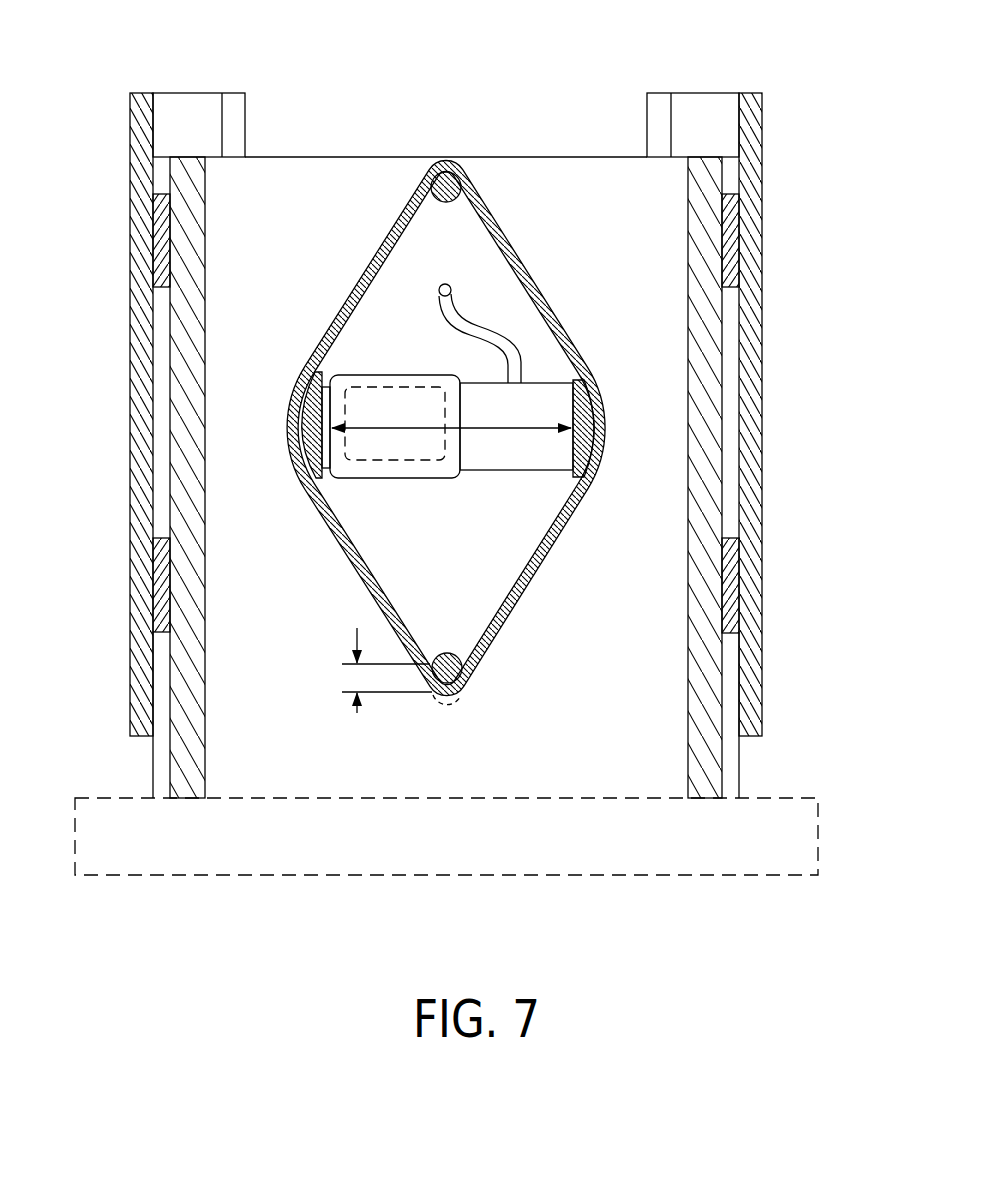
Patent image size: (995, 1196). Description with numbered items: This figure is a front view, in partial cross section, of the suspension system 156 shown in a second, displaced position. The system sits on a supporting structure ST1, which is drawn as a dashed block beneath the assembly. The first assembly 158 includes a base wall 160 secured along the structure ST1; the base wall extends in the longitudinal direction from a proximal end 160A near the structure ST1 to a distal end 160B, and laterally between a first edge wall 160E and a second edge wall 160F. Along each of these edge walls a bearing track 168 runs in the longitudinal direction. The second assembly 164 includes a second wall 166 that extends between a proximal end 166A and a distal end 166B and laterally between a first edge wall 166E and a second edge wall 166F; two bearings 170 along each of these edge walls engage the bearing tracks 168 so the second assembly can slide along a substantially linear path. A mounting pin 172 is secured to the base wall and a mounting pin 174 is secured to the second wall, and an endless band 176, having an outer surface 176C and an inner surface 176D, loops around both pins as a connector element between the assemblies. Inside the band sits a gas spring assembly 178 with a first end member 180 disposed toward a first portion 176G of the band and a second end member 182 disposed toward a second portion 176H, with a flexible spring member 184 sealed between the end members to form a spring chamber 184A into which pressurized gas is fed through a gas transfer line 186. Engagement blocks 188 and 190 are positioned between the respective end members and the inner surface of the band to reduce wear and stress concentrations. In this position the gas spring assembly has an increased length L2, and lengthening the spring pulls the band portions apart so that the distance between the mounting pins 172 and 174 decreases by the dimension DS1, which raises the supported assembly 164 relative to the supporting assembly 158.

The suspension system 156 is at (625, 76).
The first assembly 158 is at (347, 128).
The base wall 160 is at (580, 186).
The proximal end 160A is at (650, 757).
The distal end 160B is at (660, 197).
The first edge wall 160E is at (688, 320).
The second edge wall 160F is at (205, 345).
The second assembly 164 is at (772, 86).
The second wall 166 is at (470, 414).
The proximal end 166A is at (772, 688).
The distal end 166B is at (789, 124).
The first edge wall 166E is at (748, 490).
The second edge wall 166F is at (142, 432).
The bearing track 168 is at (185, 522).
The bearing 170 is at (162, 250).
The mounting pin 172 is at (455, 170).
The mounting pin 174 is at (457, 662).
The endless band 176 is at (340, 282).
The outer surface 176C is at (560, 525).
The inner surface 176D is at (525, 568).
The first portion 176G is at (292, 417).
The second portion 176H is at (602, 430).
The gas spring assembly 178 is at (352, 362).
The first end member 180 is at (330, 385).
The second end member 182 is at (540, 392).
The flexible spring member 184 is at (402, 392).
The spring chamber 184A is at (358, 468).
The gas transfer line 186 is at (475, 327).
The engagement block 188 is at (307, 445).
The engagement block 190 is at (592, 455).
The second length L2 is at (430, 426).
The reference dimension DS1 is at (357, 713).
The supporting structure ST1 is at (608, 878).